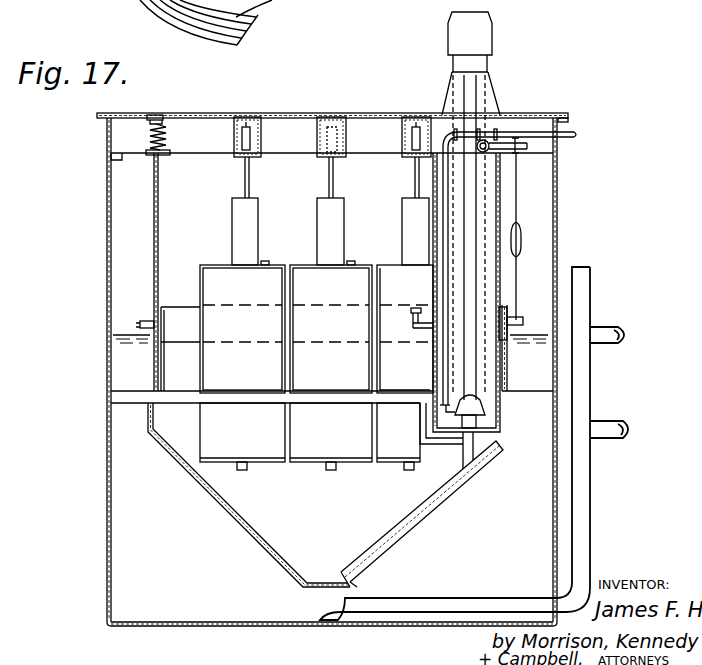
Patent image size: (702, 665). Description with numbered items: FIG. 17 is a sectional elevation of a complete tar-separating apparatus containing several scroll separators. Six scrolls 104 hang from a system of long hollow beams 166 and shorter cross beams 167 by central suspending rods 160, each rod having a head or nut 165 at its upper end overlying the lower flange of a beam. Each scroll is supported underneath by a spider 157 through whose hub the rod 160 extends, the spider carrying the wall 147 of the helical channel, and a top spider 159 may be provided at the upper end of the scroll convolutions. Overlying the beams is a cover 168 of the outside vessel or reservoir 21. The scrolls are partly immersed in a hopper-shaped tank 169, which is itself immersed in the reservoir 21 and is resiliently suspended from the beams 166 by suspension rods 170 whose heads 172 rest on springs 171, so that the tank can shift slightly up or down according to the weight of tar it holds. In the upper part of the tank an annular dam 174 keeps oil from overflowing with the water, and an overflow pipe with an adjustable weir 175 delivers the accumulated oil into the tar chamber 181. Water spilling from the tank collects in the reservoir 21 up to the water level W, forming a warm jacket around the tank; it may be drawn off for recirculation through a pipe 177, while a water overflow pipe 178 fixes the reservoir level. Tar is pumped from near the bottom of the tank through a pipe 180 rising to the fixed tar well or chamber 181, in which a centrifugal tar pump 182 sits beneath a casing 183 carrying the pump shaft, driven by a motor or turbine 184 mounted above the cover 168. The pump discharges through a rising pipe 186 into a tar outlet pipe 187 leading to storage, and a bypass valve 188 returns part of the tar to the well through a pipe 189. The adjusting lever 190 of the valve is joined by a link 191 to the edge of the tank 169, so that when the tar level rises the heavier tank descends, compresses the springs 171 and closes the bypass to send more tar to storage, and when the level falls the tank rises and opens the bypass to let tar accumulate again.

The reservoir 21 is at (107, 297).
The cover 168 is at (201, 105).
The heads of the suspension rods 172 is at (148, 117).
The springs 171 is at (148, 136).
The shorter cross beams 167 is at (264, 118).
The heads or nuts 165 is at (262, 150).
The long hollow beams 166 is at (374, 137).
The supporting rod 160 is at (245, 176).
The wall of the helical channel 147 is at (233, 207).
The scrolls 104 is at (210, 267).
The top spider 159 is at (360, 266).
The spider 157 is at (311, 464).
The suspension rods 170 is at (154, 242).
The annular dam 174 is at (172, 333).
The adjustable weir 175 is at (148, 321).
The water W is at (118, 345).
The tank 169 is at (504, 350).
The tar pipe 180 is at (386, 546).
The rising pipe 186 is at (433, 362).
The motor or turbine 184 is at (471, 63).
The bypass pipe 189 is at (487, 200).
The bypass valve 188 is at (492, 141).
The tar outlet pipe 187 is at (577, 131).
The adjusting lever 190 is at (527, 151).
The link 191 is at (516, 258).
The casing 183 is at (488, 400).
The centrifugal tar pump 182 is at (478, 435).
The tar well or chamber 181 is at (487, 447).
The water pipe 177 is at (610, 438).
The water overflow pipe 178 is at (602, 343).